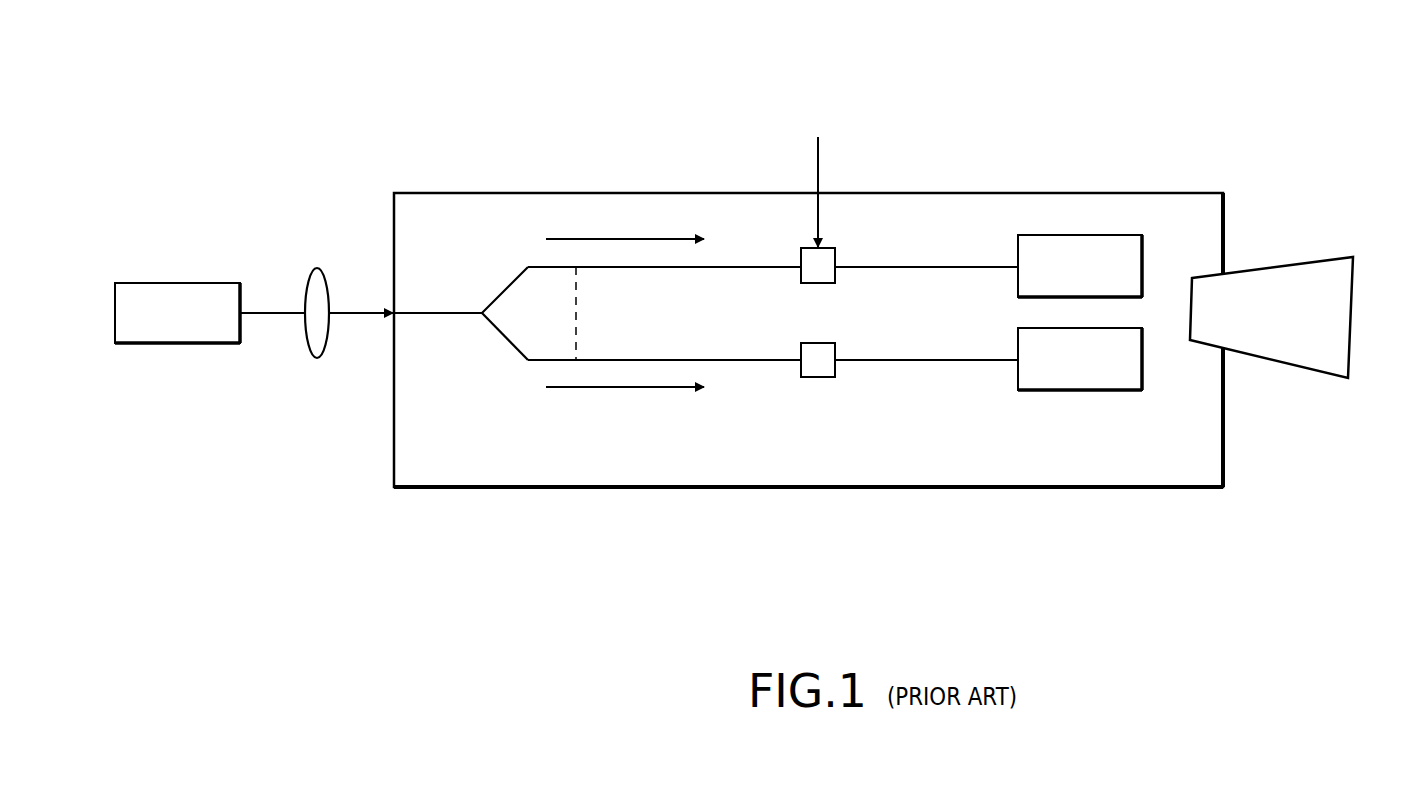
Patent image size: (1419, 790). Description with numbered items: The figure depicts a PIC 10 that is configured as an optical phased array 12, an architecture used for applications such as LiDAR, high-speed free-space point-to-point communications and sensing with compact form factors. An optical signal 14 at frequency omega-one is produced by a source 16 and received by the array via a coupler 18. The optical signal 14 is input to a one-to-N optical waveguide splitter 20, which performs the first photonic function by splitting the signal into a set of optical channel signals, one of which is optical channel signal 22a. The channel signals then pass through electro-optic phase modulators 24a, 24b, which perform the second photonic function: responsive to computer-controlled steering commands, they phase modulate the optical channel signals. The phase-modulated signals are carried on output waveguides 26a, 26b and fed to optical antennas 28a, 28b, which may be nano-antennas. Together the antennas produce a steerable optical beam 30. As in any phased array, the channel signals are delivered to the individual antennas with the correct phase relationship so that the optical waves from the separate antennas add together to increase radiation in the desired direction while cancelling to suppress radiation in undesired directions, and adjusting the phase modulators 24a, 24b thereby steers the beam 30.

The PIC 10 is at (457, 447).
The optical phased array 12 is at (808, 261).
The optical signal 14 is at (357, 308).
The source 16 is at (179, 283).
The coupler 18 is at (307, 274).
The 1-to-N optical waveguide splitter 20 is at (523, 268).
The optical channel signal 22a is at (620, 239).
The electro-optic phase modulator 24a is at (801, 252).
The electro-optic phase modulator 24b is at (808, 378).
The output waveguide 26a is at (921, 265).
The output waveguide 26b is at (908, 362).
The optical antenna 28a is at (1062, 237).
The optical antenna 28b is at (1068, 392).
The steerable optical beam 30 is at (1290, 262).